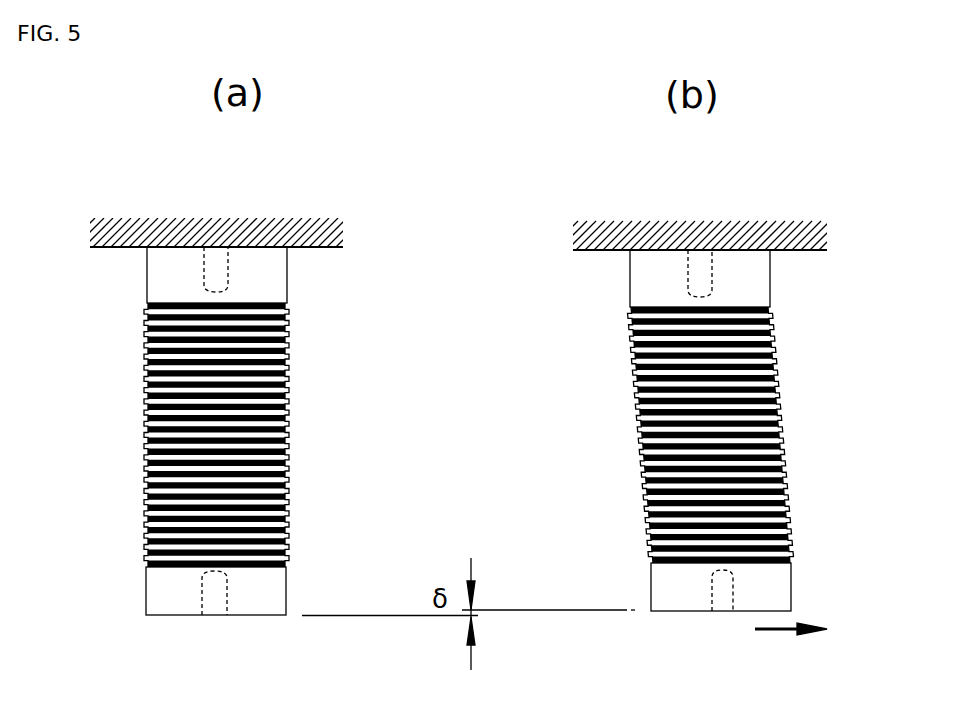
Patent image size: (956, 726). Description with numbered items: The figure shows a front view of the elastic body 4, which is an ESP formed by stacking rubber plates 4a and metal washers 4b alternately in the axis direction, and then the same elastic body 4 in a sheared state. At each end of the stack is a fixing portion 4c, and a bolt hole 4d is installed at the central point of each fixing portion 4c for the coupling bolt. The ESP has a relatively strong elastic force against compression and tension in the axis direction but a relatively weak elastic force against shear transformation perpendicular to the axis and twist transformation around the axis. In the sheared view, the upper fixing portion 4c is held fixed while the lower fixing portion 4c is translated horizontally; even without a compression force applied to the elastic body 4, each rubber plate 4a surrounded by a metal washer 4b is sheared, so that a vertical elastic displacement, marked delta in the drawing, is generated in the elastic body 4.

In FIG. 5a, the elastic body 4 is at (97, 319).
In FIG. 5b, the elastic body 4 is at (582, 321).
In FIG. 5a, the rubber plate 4a is at (287, 400).
In FIG. 5b, the rubber plate 4a is at (778, 404).
In FIG. 5a, the metal washer 4b is at (147, 405).
In FIG. 5b, the metal washer 4b is at (636, 406).
In FIG. 5a, the fixing portion 4c is at (277, 282).
In FIG. 5b, the fixing portion 4c is at (760, 287).
In FIG. 5a, the bolt hole 4d is at (228, 433).
In FIG. 5b, the bolt hole 4d is at (714, 433).